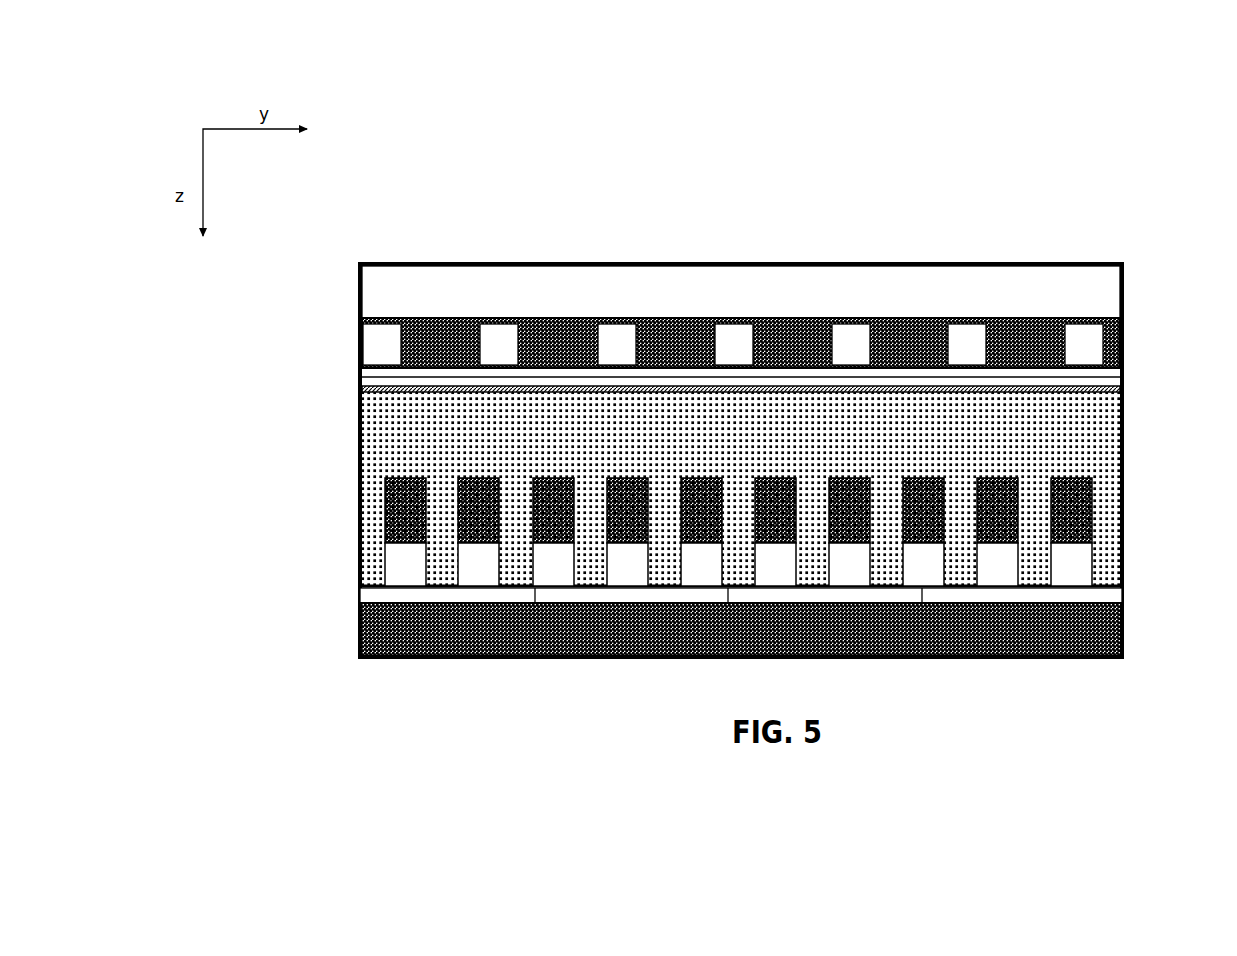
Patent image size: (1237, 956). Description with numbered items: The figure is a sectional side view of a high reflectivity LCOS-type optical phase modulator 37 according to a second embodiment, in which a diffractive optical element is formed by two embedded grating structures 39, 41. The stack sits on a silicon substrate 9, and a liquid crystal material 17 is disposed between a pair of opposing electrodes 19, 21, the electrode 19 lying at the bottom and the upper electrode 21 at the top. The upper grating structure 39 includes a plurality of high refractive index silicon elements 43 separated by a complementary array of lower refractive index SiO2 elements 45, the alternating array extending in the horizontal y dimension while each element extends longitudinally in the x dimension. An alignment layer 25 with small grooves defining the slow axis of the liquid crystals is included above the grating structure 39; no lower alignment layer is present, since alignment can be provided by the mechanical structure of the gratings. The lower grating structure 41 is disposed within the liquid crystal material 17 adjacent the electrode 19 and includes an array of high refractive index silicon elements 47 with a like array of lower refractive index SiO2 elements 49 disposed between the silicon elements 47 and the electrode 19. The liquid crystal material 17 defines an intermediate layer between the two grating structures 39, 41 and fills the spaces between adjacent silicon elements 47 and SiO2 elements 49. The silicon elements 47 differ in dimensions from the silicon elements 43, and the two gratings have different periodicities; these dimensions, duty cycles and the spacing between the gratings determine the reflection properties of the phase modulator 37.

The optical phase modulator 37 is at (709, 236).
The upper electrode 21 is at (361, 290).
The grating structure 39 is at (1141, 334).
The silicon elements 43 is at (563, 318).
The SiO2 elements 45 is at (734, 330).
The alignment layer 25 is at (1118, 380).
The liquid crystal material 17 is at (380, 430).
The grating structure 41 is at (1141, 516).
The silicon elements 47 is at (385, 500).
The SiO2 elements 49 is at (392, 568).
The electrode 19 is at (1122, 598).
The silicon substrate 9 is at (360, 640).